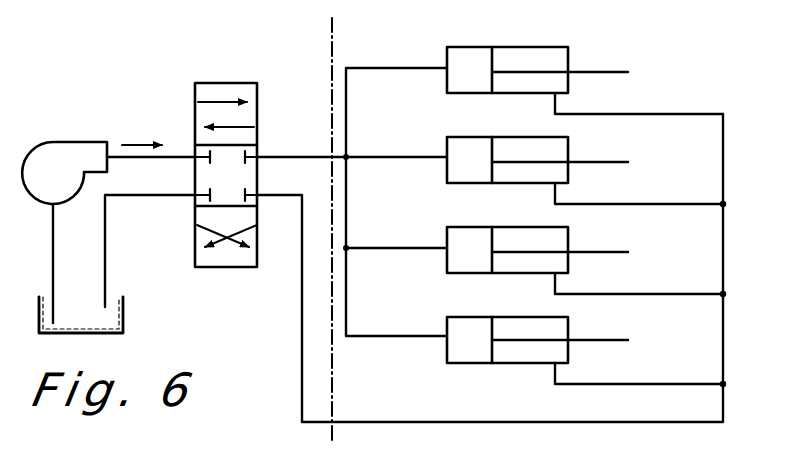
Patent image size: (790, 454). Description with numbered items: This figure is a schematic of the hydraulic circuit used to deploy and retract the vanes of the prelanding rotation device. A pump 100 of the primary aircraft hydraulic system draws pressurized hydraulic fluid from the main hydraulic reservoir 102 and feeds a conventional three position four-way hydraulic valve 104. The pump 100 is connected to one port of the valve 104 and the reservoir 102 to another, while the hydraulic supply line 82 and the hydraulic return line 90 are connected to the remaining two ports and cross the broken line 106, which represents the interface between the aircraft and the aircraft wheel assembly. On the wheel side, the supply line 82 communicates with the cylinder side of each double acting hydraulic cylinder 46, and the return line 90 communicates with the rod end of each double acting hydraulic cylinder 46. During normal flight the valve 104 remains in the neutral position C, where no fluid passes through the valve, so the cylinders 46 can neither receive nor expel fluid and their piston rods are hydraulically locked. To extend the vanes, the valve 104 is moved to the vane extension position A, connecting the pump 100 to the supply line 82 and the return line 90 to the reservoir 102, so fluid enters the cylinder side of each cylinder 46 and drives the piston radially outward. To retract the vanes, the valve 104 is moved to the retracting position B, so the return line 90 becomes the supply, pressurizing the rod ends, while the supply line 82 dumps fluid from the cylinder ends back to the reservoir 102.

The double acting hydraulic cylinder 46 is at (558, 57).
The hydraulic supply line 82 is at (289, 162).
The hydraulic return line 90 is at (281, 205).
The pump 100 is at (58, 146).
The main hydraulic reservoir 102 is at (123, 318).
The three position four-way hydraulic valve 104 is at (199, 105).
The broken line 106 is at (328, 34).
The vane extension position A is at (225, 88).
The retracting position B is at (228, 258).
The neutral position C is at (204, 172).